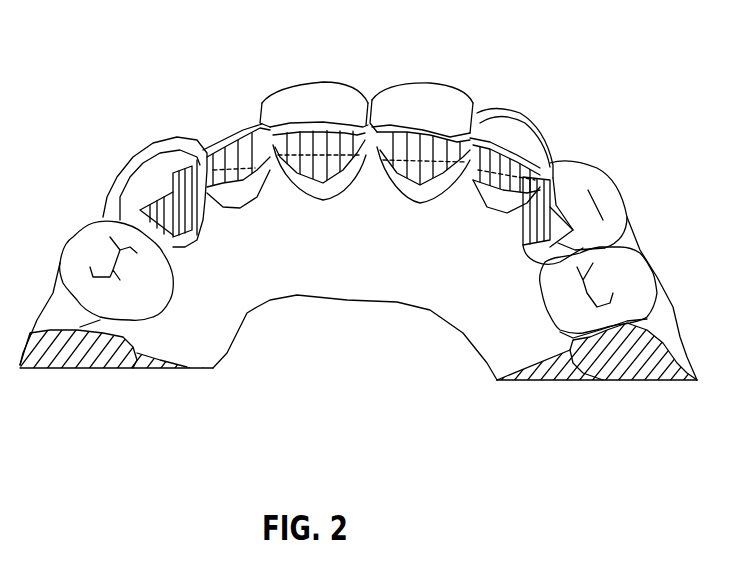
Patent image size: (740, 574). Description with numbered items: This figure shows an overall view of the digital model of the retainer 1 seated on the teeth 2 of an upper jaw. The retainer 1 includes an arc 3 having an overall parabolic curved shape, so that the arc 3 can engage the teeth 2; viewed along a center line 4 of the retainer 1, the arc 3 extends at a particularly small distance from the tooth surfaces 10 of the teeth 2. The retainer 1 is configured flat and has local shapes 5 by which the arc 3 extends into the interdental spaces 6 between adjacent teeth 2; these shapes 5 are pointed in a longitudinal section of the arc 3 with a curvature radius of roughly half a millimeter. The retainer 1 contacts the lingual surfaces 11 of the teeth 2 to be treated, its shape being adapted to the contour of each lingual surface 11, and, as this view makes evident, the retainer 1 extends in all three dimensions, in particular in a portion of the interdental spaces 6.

The retainer 1 is at (158, 180).
The teeth 2 is at (223, 123).
The arc 3 is at (505, 150).
The center line 4 is at (403, 157).
The local shapes 5 is at (361, 113).
The interdental spaces 6 is at (361, 113).
The tooth surfaces 10 is at (456, 87).
The lingual surfaces 11 is at (456, 87).